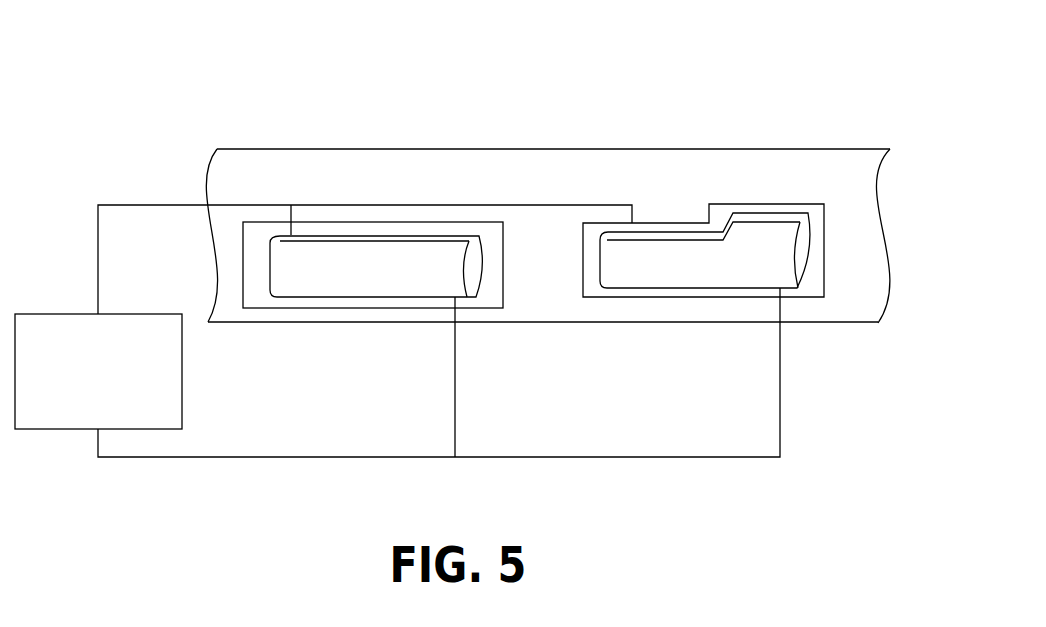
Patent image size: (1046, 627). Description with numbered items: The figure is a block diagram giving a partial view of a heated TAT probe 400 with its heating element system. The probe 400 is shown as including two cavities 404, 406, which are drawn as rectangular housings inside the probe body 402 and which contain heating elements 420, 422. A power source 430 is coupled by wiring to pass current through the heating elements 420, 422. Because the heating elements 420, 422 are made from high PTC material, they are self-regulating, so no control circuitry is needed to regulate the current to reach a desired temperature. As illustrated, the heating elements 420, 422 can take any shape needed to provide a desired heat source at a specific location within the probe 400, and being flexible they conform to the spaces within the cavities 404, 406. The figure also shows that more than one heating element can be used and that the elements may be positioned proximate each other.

The heated TAT probe 400 is at (704, 80).
The substrate / housing band 402 is at (340, 148).
The cavity 404 is at (488, 257).
The cavity 406 is at (808, 292).
The heating element 420 is at (367, 297).
The heating element 422 is at (685, 288).
The power source 430 is at (82, 416).